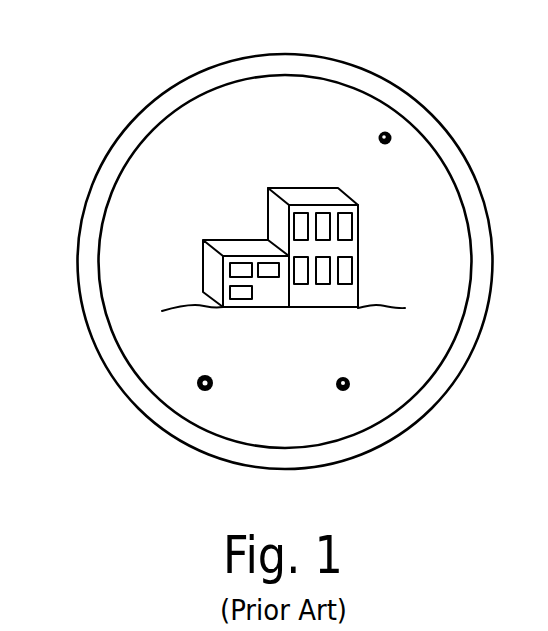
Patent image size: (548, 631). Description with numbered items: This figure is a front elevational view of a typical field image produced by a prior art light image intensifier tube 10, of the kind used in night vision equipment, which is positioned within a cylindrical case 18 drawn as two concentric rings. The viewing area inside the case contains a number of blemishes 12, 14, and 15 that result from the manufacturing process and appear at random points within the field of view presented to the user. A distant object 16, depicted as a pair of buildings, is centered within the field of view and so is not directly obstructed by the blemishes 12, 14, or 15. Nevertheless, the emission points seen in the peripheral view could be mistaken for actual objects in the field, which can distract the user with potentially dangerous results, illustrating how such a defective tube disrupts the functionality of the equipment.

The image intensifier tube 10 is at (60, 103).
The blemish 12 is at (205, 375).
The blemish 14 is at (342, 377).
The blemish 15 is at (378, 134).
The distant object 16 is at (248, 212).
The cylindrical case 18 is at (403, 88).